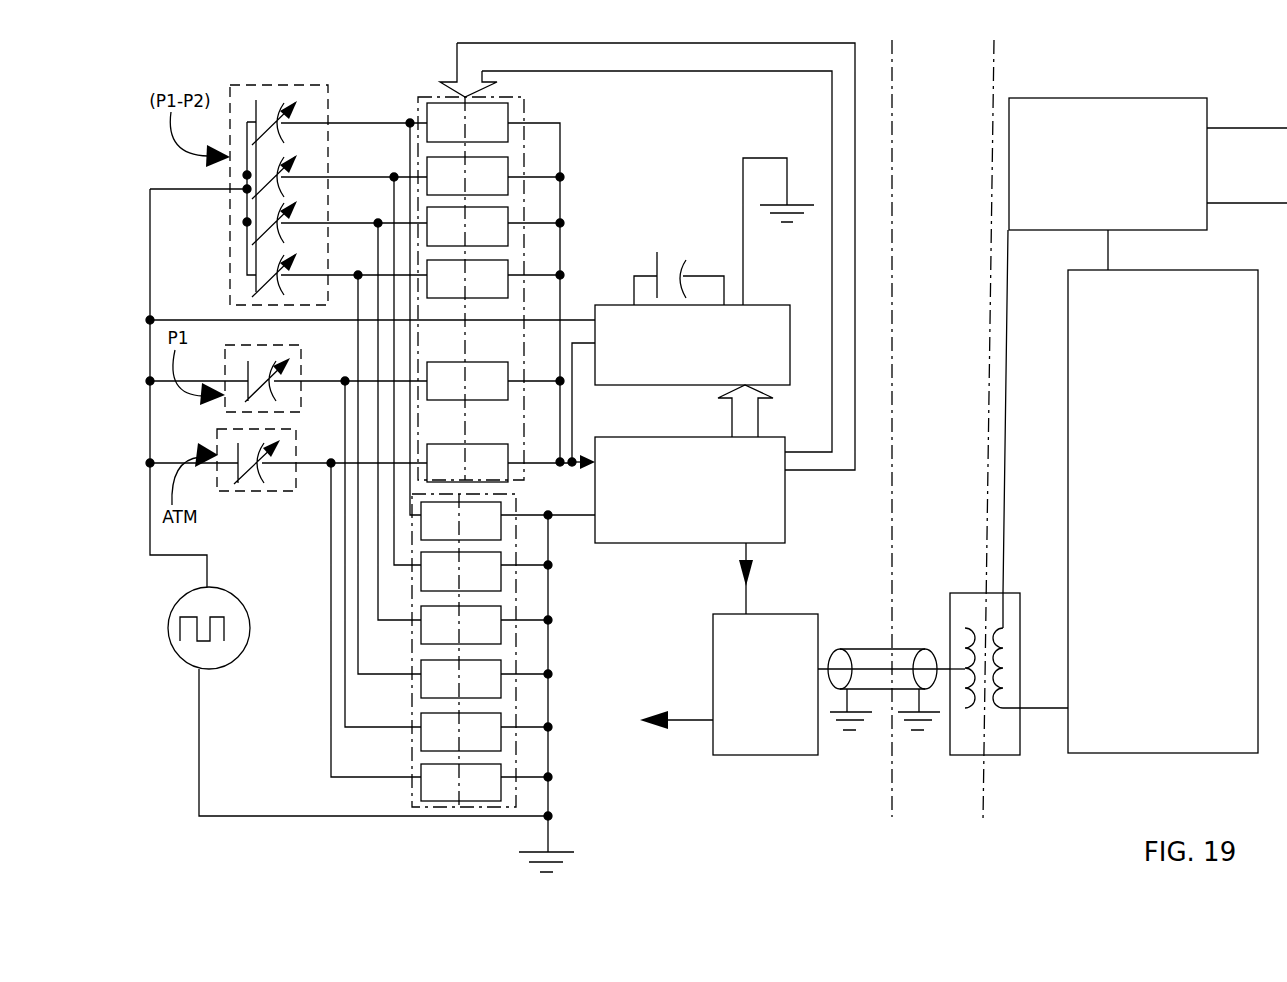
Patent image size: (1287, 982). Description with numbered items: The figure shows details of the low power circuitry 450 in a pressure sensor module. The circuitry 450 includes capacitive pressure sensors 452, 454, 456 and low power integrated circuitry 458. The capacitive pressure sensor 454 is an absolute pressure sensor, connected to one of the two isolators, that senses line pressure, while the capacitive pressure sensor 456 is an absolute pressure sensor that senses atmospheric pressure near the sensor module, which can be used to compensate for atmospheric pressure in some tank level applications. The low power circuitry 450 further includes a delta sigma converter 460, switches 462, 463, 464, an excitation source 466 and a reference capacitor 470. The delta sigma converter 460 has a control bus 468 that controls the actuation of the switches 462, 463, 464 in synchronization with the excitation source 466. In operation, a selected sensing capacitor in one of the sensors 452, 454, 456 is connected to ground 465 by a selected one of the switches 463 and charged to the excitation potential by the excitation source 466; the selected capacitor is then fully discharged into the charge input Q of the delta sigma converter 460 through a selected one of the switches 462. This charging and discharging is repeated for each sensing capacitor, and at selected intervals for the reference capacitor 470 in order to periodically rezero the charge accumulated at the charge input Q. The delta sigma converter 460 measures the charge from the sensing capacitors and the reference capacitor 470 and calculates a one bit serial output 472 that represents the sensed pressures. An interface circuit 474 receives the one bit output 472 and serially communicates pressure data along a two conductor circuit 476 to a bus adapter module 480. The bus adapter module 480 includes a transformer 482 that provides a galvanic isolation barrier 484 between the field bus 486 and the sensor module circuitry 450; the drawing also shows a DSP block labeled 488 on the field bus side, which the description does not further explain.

The low power circuitry 450 is at (823, 832).
The capacitive pressure sensor 452 is at (270, 85).
The capacitive pressure sensor 454 is at (292, 345).
The capacitive pressure sensor 456 is at (248, 492).
The low power integrated circuitry 458 is at (362, 74).
The delta sigma converter 460 is at (678, 490).
The switches 462 is at (521, 97).
The switches 463 is at (410, 802).
The switches 464 is at (691, 312).
The ground 465 is at (556, 852).
The excitation source 466 is at (219, 668).
The control bus 468 is at (650, 58).
The reference capacitor 470 is at (683, 258).
The 1 bit serial output 472 is at (748, 594).
The interface circuit 474 is at (719, 687).
The two conductor circuit 476 is at (868, 650).
The bus adapter module 480 is at (915, 808).
The transformer 482 is at (1003, 757).
The galvanic isolation barrier 484 is at (979, 548).
The field bus 486 is at (1256, 128).
The digital signal processor 488 is at (1163, 511).